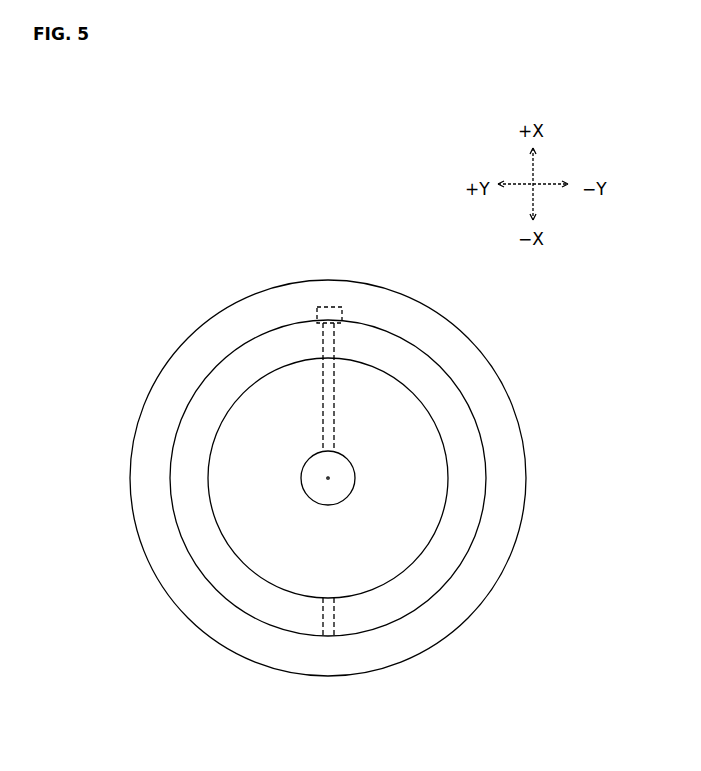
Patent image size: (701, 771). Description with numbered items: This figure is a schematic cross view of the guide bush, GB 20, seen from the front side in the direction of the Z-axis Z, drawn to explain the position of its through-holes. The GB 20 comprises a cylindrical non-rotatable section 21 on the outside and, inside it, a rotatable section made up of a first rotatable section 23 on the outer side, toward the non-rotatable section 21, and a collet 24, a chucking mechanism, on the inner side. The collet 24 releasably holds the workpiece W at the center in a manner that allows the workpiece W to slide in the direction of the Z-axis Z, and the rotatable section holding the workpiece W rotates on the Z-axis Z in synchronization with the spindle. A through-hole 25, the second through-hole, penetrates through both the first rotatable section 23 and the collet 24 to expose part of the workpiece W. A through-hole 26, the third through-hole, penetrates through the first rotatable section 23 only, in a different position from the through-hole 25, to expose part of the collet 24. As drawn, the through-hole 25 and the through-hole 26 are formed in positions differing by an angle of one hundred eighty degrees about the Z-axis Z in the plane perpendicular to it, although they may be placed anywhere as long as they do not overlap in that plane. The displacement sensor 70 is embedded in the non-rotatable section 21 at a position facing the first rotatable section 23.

The guide bush 20 is at (336, 425).
The non-rotatable section 21 is at (195, 347).
The first rotatable section 23 is at (453, 542).
The collet 24 is at (288, 553).
The through-hole 25 is at (335, 347).
The through-hole 26 is at (340, 618).
The displacement sensor 70 is at (330, 300).
The workpiece W is at (302, 487).
The Z-axis Z is at (329, 479).